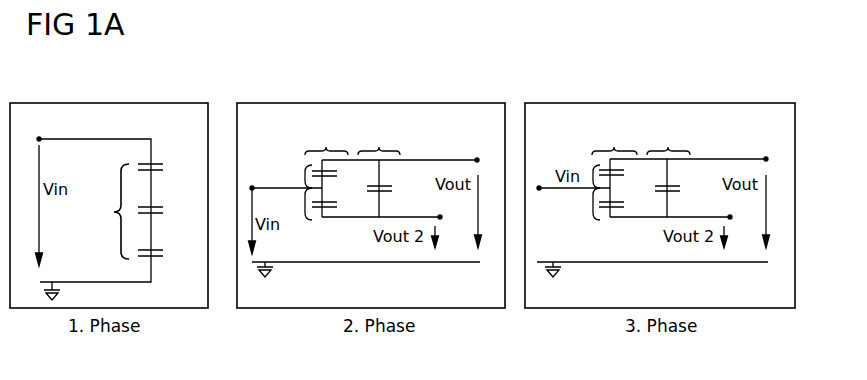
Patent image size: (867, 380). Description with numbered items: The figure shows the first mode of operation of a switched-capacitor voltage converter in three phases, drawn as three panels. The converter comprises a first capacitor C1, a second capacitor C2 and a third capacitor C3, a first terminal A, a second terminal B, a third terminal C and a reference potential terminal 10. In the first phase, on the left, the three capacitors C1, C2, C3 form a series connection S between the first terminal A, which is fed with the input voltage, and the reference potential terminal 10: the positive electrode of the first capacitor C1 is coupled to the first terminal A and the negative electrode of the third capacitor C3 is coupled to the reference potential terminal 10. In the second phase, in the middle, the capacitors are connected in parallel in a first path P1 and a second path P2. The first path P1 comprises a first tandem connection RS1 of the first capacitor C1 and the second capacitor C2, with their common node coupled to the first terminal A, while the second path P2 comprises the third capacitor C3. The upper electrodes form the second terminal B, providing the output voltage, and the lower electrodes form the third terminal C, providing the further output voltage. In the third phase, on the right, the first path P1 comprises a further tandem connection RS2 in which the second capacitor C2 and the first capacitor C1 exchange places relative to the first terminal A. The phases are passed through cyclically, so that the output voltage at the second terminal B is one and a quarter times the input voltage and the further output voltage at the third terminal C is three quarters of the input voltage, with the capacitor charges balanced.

The reference potential terminal 10 is at (303, 283).
The first capacitor C1 is at (392, 185).
The second capacitor C2 is at (392, 191).
The third capacitor C3 is at (420, 219).
The series connection S is at (112, 211).
The first tandem connection RS1 is at (288, 192).
The further tandem connection RS2 is at (575, 192).
The first path P1 is at (471, 140).
The second path P2 is at (524, 140).
The first terminal A is at (285, 160).
The second terminal B is at (627, 161).
The third terminal C is at (591, 219).